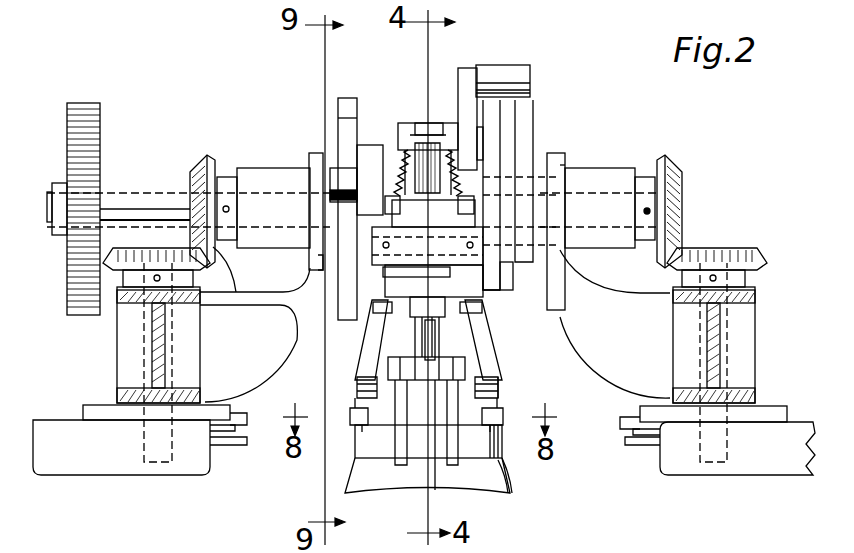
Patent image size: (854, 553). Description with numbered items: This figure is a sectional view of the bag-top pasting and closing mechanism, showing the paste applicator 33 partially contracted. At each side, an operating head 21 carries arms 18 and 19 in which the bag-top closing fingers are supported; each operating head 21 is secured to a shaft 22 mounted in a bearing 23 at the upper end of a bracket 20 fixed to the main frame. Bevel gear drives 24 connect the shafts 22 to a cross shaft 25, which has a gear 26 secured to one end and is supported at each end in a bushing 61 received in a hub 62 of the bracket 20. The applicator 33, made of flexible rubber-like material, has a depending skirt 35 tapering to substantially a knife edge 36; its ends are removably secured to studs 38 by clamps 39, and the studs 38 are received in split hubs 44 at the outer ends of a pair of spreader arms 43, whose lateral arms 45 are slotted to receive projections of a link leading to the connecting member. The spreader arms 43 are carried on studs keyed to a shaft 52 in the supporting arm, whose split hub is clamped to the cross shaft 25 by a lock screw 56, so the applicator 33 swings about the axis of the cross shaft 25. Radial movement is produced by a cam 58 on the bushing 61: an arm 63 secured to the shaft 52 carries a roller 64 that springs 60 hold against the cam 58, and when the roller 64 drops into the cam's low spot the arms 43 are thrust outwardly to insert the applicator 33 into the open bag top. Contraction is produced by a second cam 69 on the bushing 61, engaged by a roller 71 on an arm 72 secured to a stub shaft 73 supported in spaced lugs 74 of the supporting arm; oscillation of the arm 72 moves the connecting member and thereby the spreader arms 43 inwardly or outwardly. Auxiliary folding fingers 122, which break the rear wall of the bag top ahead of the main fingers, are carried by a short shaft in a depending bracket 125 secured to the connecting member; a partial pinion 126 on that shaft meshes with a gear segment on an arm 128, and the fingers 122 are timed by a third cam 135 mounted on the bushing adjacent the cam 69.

The arm 18 is at (243, 418).
The arm 19 is at (235, 446).
The bracket 20 is at (375, 300).
The operating head 21 is at (88, 482).
The shaft 22 is at (145, 340).
The bearing 23 is at (108, 290).
The bevel gear drive 24 is at (194, 165).
The cross shaft 25 is at (123, 197).
The gear 26 is at (83, 104).
The paste applicator 33 is at (390, 493).
The depending skirt 35 is at (510, 483).
The knife edge 36 is at (490, 497).
The stud 38 is at (355, 402).
The clamp 39 is at (358, 445).
The spreader arm 43 is at (370, 272).
The split hub 44 is at (500, 383).
The lateral arm 45 is at (410, 310).
The shaft 52 is at (372, 246).
The lock screw 56 is at (420, 142).
The cam 58 is at (348, 100).
The spring 60 is at (396, 160).
The bushing 61 is at (318, 268).
The hub 62 is at (252, 172).
The arm 63 is at (330, 210).
The roller 64 is at (310, 170).
The cam 69 is at (510, 286).
The roller 71 is at (518, 68).
The arm 72 is at (467, 70).
The stub shaft 73 is at (490, 142).
The lug 74 is at (447, 128).
The auxiliary folding finger 122 is at (398, 415).
The depending bracket 125 is at (450, 330).
The partial pinion 126 is at (438, 485).
The arm 128 is at (435, 345).
The cam 135 is at (495, 277).